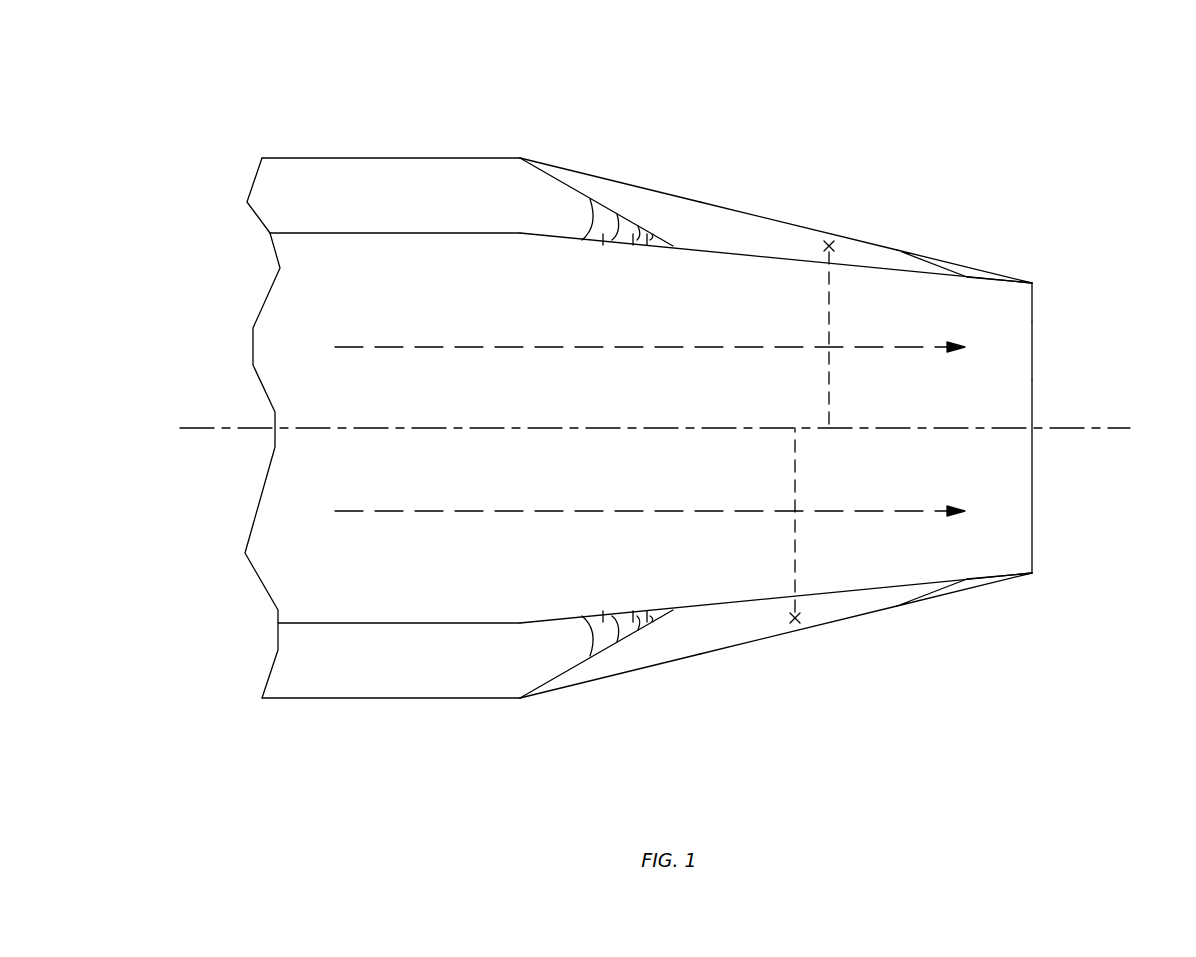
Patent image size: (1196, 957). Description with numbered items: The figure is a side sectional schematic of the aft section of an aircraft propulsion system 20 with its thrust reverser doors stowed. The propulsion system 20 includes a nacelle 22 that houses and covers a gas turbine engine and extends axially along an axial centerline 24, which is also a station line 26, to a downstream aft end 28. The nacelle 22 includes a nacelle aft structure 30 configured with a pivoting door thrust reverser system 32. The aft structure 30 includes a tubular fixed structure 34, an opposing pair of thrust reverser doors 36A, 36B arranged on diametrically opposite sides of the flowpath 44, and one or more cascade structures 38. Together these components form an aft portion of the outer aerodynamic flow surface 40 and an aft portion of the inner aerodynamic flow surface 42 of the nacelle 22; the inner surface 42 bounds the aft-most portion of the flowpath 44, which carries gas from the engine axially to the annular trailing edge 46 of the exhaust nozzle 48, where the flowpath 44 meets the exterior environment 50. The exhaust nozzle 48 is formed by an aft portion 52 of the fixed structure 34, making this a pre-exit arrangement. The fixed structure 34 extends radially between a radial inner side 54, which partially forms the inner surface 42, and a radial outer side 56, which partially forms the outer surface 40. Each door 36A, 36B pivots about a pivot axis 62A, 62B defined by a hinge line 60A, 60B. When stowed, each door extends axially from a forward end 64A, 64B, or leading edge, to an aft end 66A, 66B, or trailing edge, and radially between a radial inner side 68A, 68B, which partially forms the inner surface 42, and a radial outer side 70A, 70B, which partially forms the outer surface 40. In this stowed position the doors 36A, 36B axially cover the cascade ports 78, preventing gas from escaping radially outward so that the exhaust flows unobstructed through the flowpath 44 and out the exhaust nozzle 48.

The aircraft propulsion system 20 is at (1006, 124).
The nacelle 22 is at (272, 377).
The nacelle aft structure 30 is at (291, 131).
The axial centerline 24 is at (649, 475).
The station line 26 is at (184, 432).
The aft end 28 is at (1034, 333).
The thrust reverser system 32 is at (724, 170).
The fixed structure 34 is at (246, 203).
The thrust reverser door 36A is at (765, 215).
The thrust reverser door 36B is at (694, 660).
The cascade structure 38 is at (590, 245).
The outer aerodynamic flow surface 40 is at (391, 119).
The radial outer side 56 is at (437, 158).
The inner aerodynamic flow surface 42 is at (395, 269).
The radial inner side 54 is at (437, 234).
The flowpath 44 is at (318, 402).
The annular trailing edge 46 is at (1034, 283).
The exhaust nozzle 48 is at (1034, 372).
The exterior environment 50 is at (1143, 274).
The aft portion 52 is at (966, 265).
The hinge line 60A is at (868, 296).
The pivot axis 62A is at (831, 243).
The hinge line 60B is at (820, 567).
The pivot axis 62B is at (795, 627).
The forward end 64A is at (520, 158).
The forward end 64B is at (522, 700).
The aft end 66A is at (968, 279).
The aft end 66B is at (972, 577).
The radial inner side 68A is at (717, 254).
The radial inner side 68B is at (717, 601).
The radial outer side 70A is at (649, 189).
The radial outer side 70B is at (620, 676).
The cascade port 78 is at (603, 245).